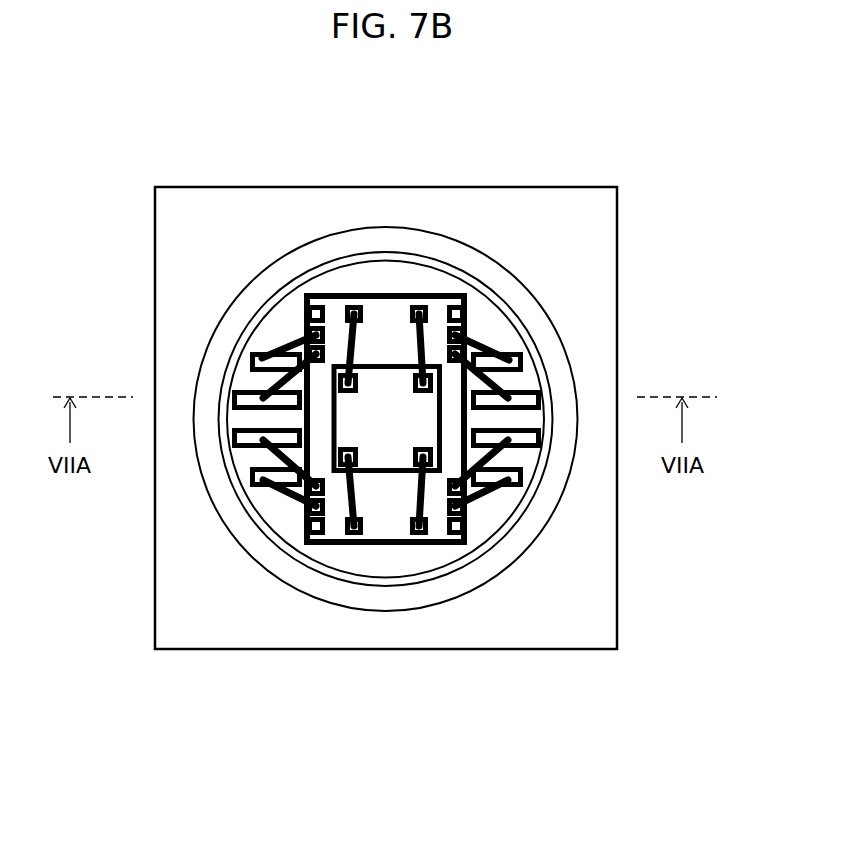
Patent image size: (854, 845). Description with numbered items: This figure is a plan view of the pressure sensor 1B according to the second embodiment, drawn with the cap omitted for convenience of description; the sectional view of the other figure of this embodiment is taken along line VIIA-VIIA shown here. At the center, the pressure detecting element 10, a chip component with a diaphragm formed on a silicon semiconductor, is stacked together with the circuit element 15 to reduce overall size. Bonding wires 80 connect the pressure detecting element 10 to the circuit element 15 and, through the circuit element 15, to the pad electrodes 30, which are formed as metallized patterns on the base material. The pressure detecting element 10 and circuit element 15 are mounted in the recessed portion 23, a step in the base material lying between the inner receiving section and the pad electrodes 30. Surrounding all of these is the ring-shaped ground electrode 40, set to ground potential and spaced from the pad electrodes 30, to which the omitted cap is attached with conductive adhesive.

The pressure sensor 1B is at (613, 114).
The pressure detecting element 10 is at (382, 393).
The circuit element 15 is at (390, 303).
The recessed portion 23 is at (500, 332).
The pad electrodes 30 is at (258, 350).
The ground electrode 40 is at (478, 577).
The bonding wires 80 is at (284, 352).